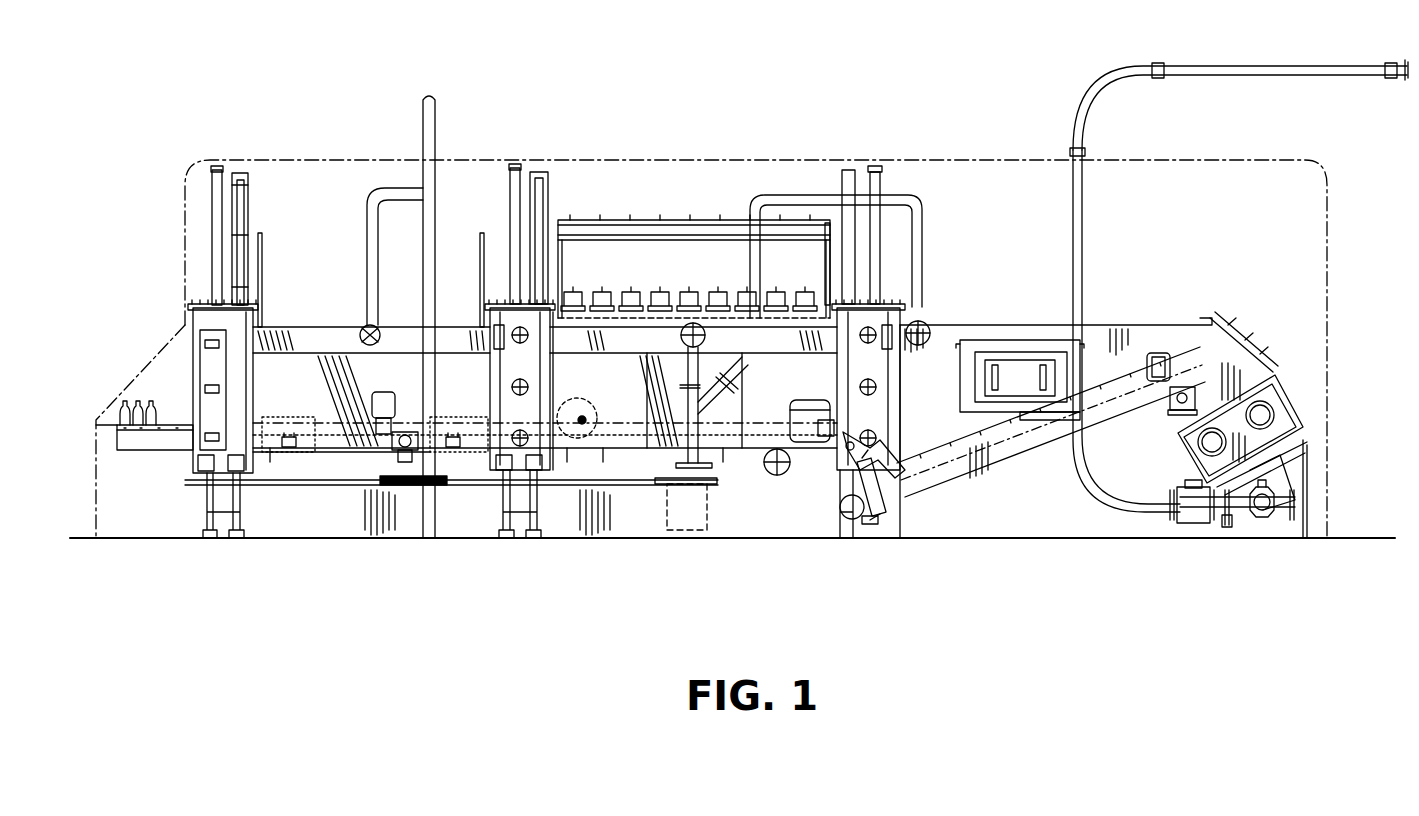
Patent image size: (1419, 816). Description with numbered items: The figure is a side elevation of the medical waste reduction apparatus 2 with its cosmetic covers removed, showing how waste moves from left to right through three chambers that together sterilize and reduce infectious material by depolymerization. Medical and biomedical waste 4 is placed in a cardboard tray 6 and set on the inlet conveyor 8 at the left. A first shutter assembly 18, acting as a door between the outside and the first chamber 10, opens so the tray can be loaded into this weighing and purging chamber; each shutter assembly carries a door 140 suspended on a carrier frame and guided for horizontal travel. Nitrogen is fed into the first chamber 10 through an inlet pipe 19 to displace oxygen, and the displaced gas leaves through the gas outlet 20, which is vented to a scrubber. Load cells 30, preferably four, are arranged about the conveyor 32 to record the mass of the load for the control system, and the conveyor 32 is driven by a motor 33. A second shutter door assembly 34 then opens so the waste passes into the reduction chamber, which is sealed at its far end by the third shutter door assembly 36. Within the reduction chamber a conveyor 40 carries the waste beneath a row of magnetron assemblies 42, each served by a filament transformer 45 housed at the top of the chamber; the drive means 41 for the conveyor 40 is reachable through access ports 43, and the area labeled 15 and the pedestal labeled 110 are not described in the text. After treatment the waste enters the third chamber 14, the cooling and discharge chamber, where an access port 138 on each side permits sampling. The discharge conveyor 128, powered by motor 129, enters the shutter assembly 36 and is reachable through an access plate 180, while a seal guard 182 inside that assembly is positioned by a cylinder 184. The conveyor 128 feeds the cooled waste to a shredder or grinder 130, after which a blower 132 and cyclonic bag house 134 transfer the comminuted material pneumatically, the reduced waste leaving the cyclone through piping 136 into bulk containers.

The medical waste reduction system and apparatus 2 is at (785, 64).
The medical and biomedical waste 4 is at (120, 422).
The cardboard tray 6 is at (118, 430).
The inlet conveyor 8 is at (143, 440).
The first chamber 10 is at (274, 398).
The third chamber 14 is at (914, 396).
The treatment station 15 is at (584, 398).
The first shutter assembly 18 is at (200, 318).
The inlet pipe 19 is at (275, 340).
The gas outlet 20 is at (373, 325).
The load cells 30 is at (292, 455).
The conveyor 32 is at (355, 455).
The motor 33 is at (420, 452).
The second shutter door assembly 34 is at (505, 318).
The third shutter door assembly 36 is at (893, 310).
The conveyor 40 is at (633, 435).
The drive means 41 is at (578, 438).
The magnetron assemblies 42 is at (688, 292).
The access ports 43 is at (640, 440).
The filament transformer 45 is at (725, 235).
The pedestal 110 is at (668, 520).
The conveyor 128 is at (1013, 457).
The motor 129 is at (1150, 352).
The shredder or grinder 130 is at (1290, 410).
The blower 132 is at (1237, 523).
The cyclonic bag house 134 is at (1262, 520).
The piping 136 is at (1085, 75).
The access port 138 is at (975, 340).
The door 140 is at (240, 175).
The access plate 180 is at (856, 470).
The seal guard 182 is at (920, 490).
The cylinder 184 is at (880, 515).